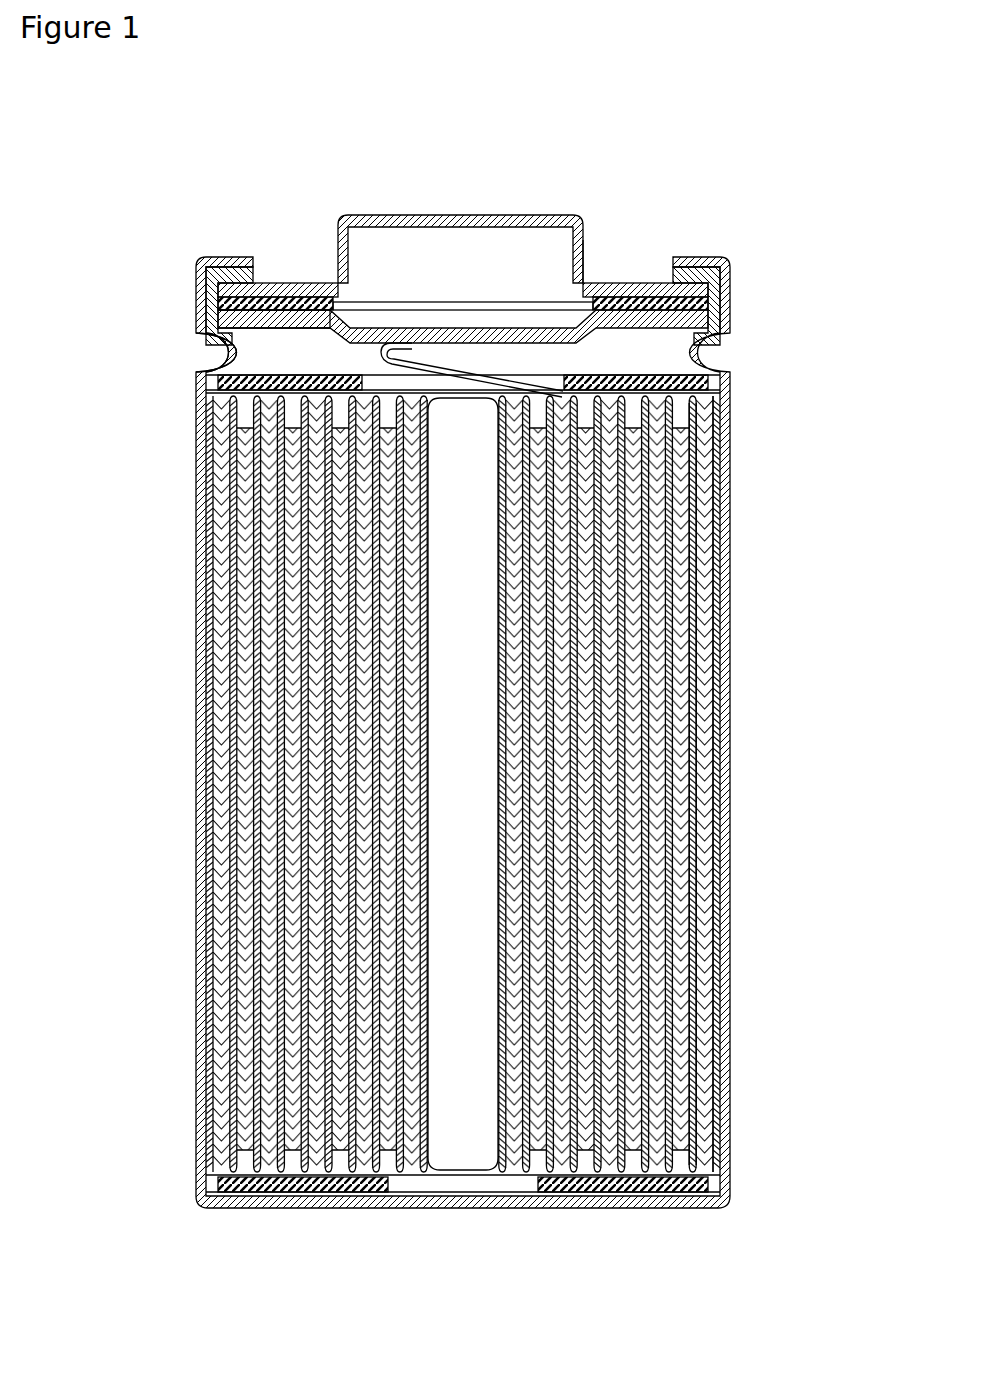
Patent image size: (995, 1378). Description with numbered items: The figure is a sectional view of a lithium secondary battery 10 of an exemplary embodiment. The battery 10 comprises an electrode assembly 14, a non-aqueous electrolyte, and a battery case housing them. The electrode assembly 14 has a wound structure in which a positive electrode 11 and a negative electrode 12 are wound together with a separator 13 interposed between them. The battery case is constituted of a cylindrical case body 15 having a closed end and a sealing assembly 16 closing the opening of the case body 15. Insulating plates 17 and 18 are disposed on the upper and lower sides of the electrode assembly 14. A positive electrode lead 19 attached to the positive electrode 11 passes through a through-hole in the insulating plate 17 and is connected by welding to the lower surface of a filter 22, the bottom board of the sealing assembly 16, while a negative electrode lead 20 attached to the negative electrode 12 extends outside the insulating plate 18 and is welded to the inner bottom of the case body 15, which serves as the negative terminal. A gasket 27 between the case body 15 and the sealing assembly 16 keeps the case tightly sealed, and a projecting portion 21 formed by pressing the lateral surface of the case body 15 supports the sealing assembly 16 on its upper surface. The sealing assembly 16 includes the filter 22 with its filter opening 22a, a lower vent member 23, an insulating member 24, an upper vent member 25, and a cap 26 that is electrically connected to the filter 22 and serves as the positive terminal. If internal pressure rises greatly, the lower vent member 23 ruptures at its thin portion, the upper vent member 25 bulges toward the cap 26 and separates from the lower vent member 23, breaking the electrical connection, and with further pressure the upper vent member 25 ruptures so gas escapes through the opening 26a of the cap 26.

The battery 10 is at (710, 97).
The positive electrode 11 is at (720, 858).
The negative electrode 12 is at (720, 890).
The separator 13 is at (828, 843).
The electrode assembly 14 is at (542, 784).
The case body 15 is at (736, 254).
The sealing assembly 16 is at (463, 231).
The insulating plate 17 is at (731, 381).
The insulating plate 18 is at (731, 1194).
The positive electrode lead 19 is at (381, 364).
The negative electrode lead 20 is at (216, 1179).
The projecting portion 21 is at (210, 382).
The filter 22 is at (463, 336).
The filter opening 22a is at (514, 305).
The lower vent member 23 is at (361, 300).
The insulating member 24 is at (287, 284).
The upper vent member 25 is at (384, 312).
The cap 26 is at (542, 222).
The opening 26a is at (593, 243).
The gasket 27 is at (731, 280).